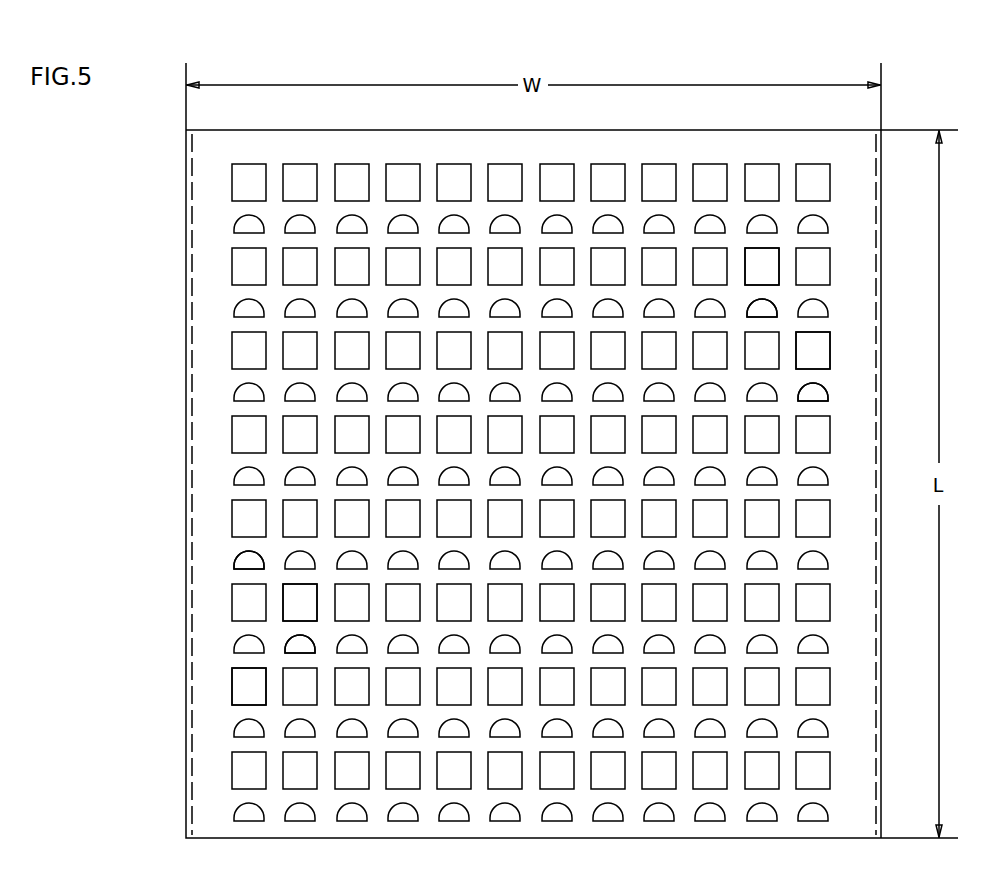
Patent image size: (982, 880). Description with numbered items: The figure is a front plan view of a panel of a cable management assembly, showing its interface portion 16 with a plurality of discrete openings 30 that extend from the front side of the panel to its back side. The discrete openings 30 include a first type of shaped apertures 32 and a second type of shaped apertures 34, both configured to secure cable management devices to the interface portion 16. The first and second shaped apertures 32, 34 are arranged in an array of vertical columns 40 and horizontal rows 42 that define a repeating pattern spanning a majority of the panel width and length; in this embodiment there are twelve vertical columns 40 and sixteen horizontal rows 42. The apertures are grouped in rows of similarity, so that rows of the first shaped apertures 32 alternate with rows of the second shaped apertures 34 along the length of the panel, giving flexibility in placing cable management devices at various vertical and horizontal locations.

The interface portion 16 is at (842, 465).
The discrete openings 30 is at (232, 683).
The first type of shaped apertures 32 is at (607, 164).
The second type of shaped apertures 34 is at (760, 216).
The vertical columns 40 is at (402, 150).
The horizontal rows 42 is at (221, 432).